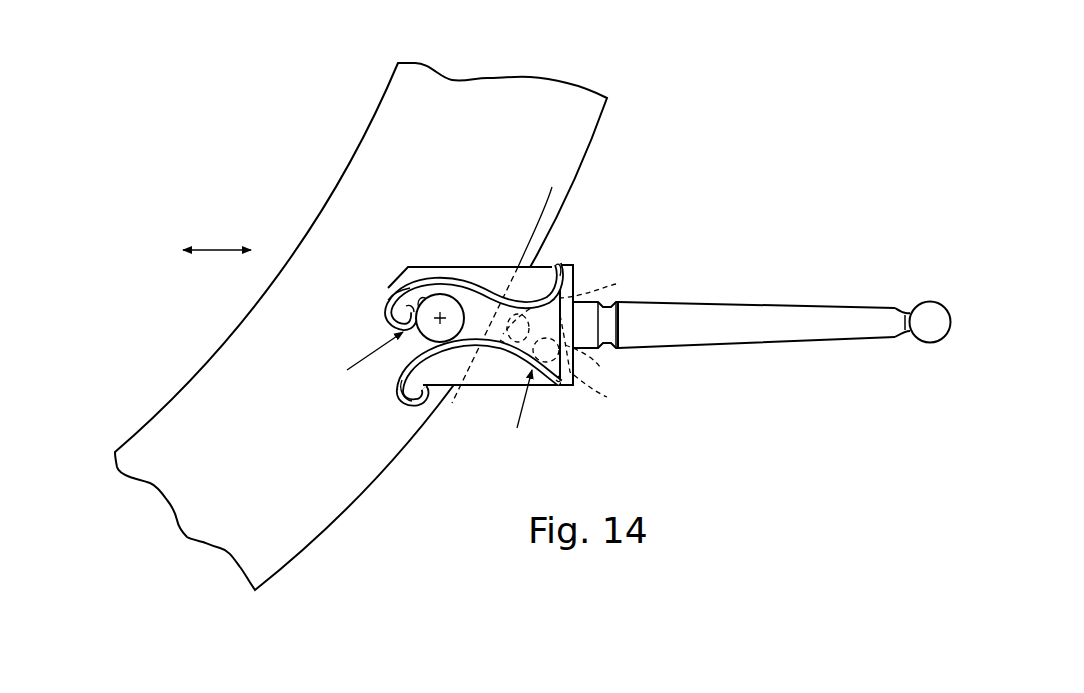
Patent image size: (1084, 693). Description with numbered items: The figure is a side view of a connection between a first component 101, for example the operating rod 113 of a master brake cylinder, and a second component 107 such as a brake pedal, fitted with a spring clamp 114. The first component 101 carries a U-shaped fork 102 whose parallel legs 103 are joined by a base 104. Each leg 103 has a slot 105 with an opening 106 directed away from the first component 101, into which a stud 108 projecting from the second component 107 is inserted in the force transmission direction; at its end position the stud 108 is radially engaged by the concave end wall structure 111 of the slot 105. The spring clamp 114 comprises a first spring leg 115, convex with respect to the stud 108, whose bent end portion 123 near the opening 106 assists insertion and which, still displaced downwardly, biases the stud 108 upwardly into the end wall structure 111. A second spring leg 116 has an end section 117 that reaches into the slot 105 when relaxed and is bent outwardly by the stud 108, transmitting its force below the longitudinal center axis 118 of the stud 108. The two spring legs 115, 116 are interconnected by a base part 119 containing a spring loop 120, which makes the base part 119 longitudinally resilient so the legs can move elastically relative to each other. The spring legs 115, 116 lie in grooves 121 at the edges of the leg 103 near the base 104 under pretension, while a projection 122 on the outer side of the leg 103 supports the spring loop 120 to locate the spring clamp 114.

The first component 101 is at (779, 298).
The U-shaped fork 102 is at (500, 258).
The leg 103 is at (512, 280).
The base 104 is at (575, 272).
The slot 105 is at (420, 365).
The opening 106 is at (348, 360).
The second component 107 is at (552, 97).
The stud 108 is at (440, 308).
The end wall structure 111 is at (418, 303).
The operating rod 113 is at (718, 337).
The spring clamp 114 is at (510, 411).
The first spring leg 115 is at (469, 350).
The second spring leg 116 is at (471, 285).
The end section 117 is at (386, 310).
The longitudinal center axis 118 is at (413, 290).
The base part 119 is at (576, 364).
The spring loop 120 is at (587, 302).
The groove 121 is at (563, 262).
The projection 122 is at (579, 348).
The end portion 123 is at (400, 386).